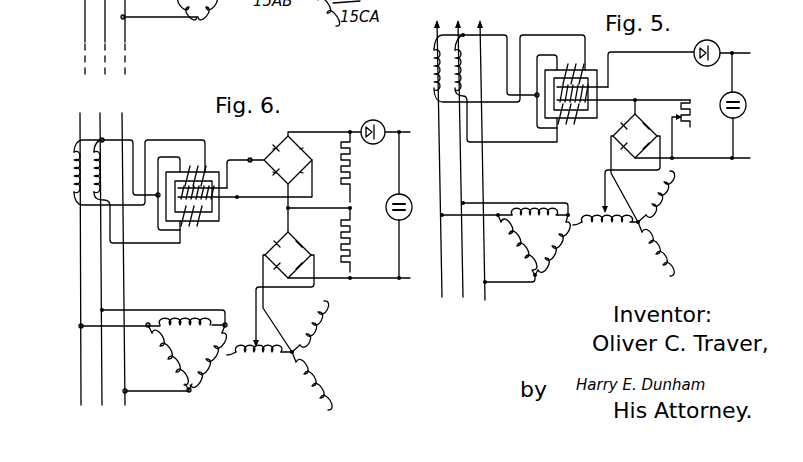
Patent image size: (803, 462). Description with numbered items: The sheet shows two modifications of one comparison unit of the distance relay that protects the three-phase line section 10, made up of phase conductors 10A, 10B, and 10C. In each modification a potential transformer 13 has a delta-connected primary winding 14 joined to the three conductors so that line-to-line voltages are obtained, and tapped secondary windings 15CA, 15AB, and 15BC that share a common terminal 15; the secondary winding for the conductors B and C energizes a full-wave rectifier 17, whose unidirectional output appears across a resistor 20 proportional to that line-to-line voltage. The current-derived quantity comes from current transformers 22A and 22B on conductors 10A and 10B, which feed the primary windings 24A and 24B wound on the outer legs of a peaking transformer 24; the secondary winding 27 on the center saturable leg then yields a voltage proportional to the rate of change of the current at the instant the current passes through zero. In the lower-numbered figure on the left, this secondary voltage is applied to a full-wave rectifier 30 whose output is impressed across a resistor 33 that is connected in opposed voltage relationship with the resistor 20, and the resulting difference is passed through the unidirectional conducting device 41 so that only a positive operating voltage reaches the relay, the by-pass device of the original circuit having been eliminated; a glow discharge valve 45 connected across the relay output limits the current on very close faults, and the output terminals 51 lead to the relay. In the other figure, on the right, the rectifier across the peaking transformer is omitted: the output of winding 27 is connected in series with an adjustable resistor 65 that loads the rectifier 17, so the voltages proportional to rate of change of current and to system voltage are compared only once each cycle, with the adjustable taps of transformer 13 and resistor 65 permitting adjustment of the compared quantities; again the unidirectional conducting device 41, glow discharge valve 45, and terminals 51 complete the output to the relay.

In FIG. 6, the line section 10 is at (80, 259).
In FIG. 5, the line section 10 is at (450, 185).
In FIG. 6, the phase conductor 10A is at (80, 250).
In FIG. 5, the phase conductor 10A is at (441, 292).
In FIG. 6, the phase conductor 10B is at (101, 270).
In FIG. 5, the phase conductor 10B is at (462, 303).
In FIG. 6, the phase conductor 10C is at (122, 281).
In FIG. 5, the phase conductor 10C is at (484, 305).
In FIG. 6, the potential transformer 13 is at (220, 354).
In FIG. 5, the potential transformer 13 is at (576, 227).
In FIG. 6, the delta-connected primary winding 14 is at (153, 350).
In FIG. 5, the delta-connected primary winding 14 is at (505, 242).
In FIG. 6, the common terminal 15 is at (294, 355).
In FIG. 5, the common terminal 15 is at (642, 223).
In FIG. 6, the secondary winding 15AB is at (266, 357).
In FIG. 5, the secondary winding 15AB is at (616, 228).
In FIG. 6, the secondary winding 15BC is at (308, 330).
In FIG. 5, the secondary winding 15BC is at (654, 205).
In FIG. 6, the secondary winding 15CA is at (312, 372).
In FIG. 5, the secondary winding 15CA is at (660, 245).
In FIG. 6, the full-wave rectifier 17 is at (288, 255).
In FIG. 5, the full-wave rectifier 17 is at (635, 129).
In FIG. 6, the resistor 20 is at (354, 243).
In FIG. 6, the current transformer 22A is at (74, 164).
In FIG. 5, the current transformer 22A is at (434, 78).
In FIG. 6, the current transformer 22B is at (83, 143).
In FIG. 5, the current transformer 22B is at (444, 46).
In FIG. 6, the peaking transformer 24 is at (200, 182).
In FIG. 5, the peaking transformer 24 is at (613, 98).
In FIG. 6, the primary winding 24A is at (200, 170).
In FIG. 5, the primary winding 24A is at (573, 68).
In FIG. 6, the primary winding 24B is at (200, 218).
In FIG. 5, the primary winding 24B is at (570, 123).
In FIG. 6, the secondary winding 27 is at (200, 195).
In FIG. 5, the secondary winding 27 is at (590, 98).
In FIG. 6, the full-wave rectifier 30 is at (288, 160).
In FIG. 6, the resistor 33 is at (353, 170).
In FIG. 6, the unidirectional conducting device 41 is at (366, 122).
In FIG. 5, the unidirectional conducting device 41 is at (696, 60).
In FIG. 6, the glow discharge valve 45 is at (402, 196).
In FIG. 5, the glow discharge valve 45 is at (740, 114).
In FIG. 6, the output terminals 51 is at (404, 282).
In FIG. 5, the output terminals 51 is at (748, 160).
In FIG. 5, the adjustable resistor 65 is at (689, 120).